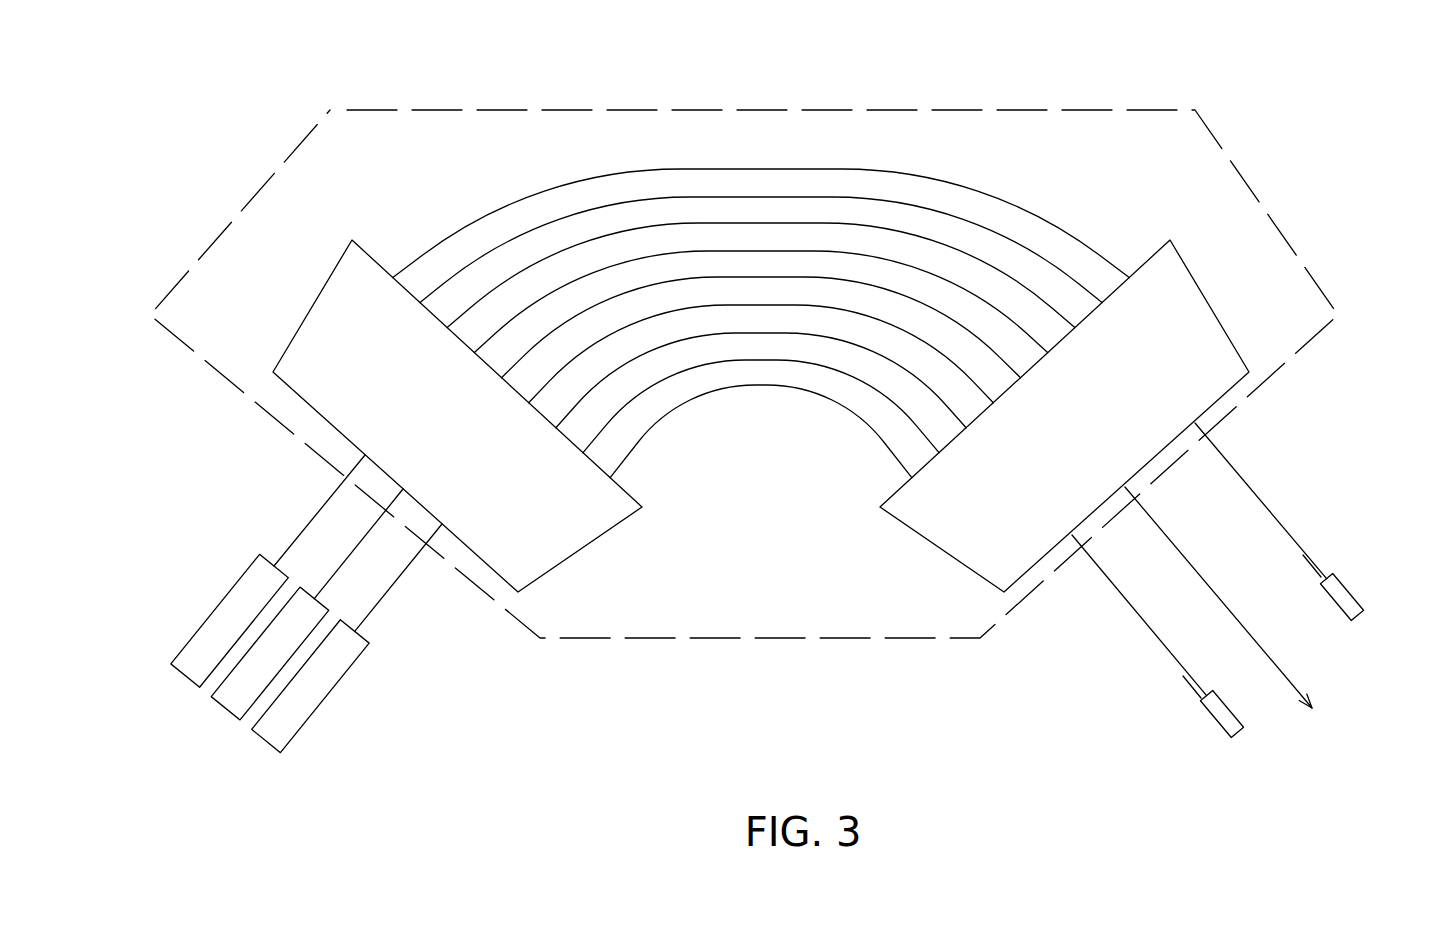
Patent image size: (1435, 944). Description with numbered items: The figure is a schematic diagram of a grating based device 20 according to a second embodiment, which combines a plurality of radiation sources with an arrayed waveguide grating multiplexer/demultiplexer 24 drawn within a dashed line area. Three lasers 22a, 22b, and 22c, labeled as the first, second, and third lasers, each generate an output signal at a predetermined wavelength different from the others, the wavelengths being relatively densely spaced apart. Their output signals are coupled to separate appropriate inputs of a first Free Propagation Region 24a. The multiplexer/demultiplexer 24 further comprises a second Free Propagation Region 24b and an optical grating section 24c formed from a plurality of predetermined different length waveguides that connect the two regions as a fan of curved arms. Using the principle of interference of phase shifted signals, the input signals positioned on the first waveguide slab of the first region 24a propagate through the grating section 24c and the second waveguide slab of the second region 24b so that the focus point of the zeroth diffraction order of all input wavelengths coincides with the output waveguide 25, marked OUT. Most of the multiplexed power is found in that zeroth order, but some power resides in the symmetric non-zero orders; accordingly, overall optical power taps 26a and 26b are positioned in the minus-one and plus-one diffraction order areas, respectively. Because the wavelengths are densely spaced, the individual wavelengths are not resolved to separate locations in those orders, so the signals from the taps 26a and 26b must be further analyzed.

The grating based device 20 is at (466, 77).
The laser 22a is at (233, 587).
The laser 22b is at (308, 587).
The laser 22c is at (325, 697).
The Arrayed Wavelength Grating multiplexer/demultiplexer 24 is at (607, 110).
The first Free Propagation Region 24a is at (312, 308).
The second Free Propagation Region 24b is at (1217, 310).
The optical grating section 24c is at (785, 277).
The output waveguide 25 is at (1192, 563).
The overall optical power tap 26a is at (1235, 735).
The overall optical power tap 26b is at (1356, 618).